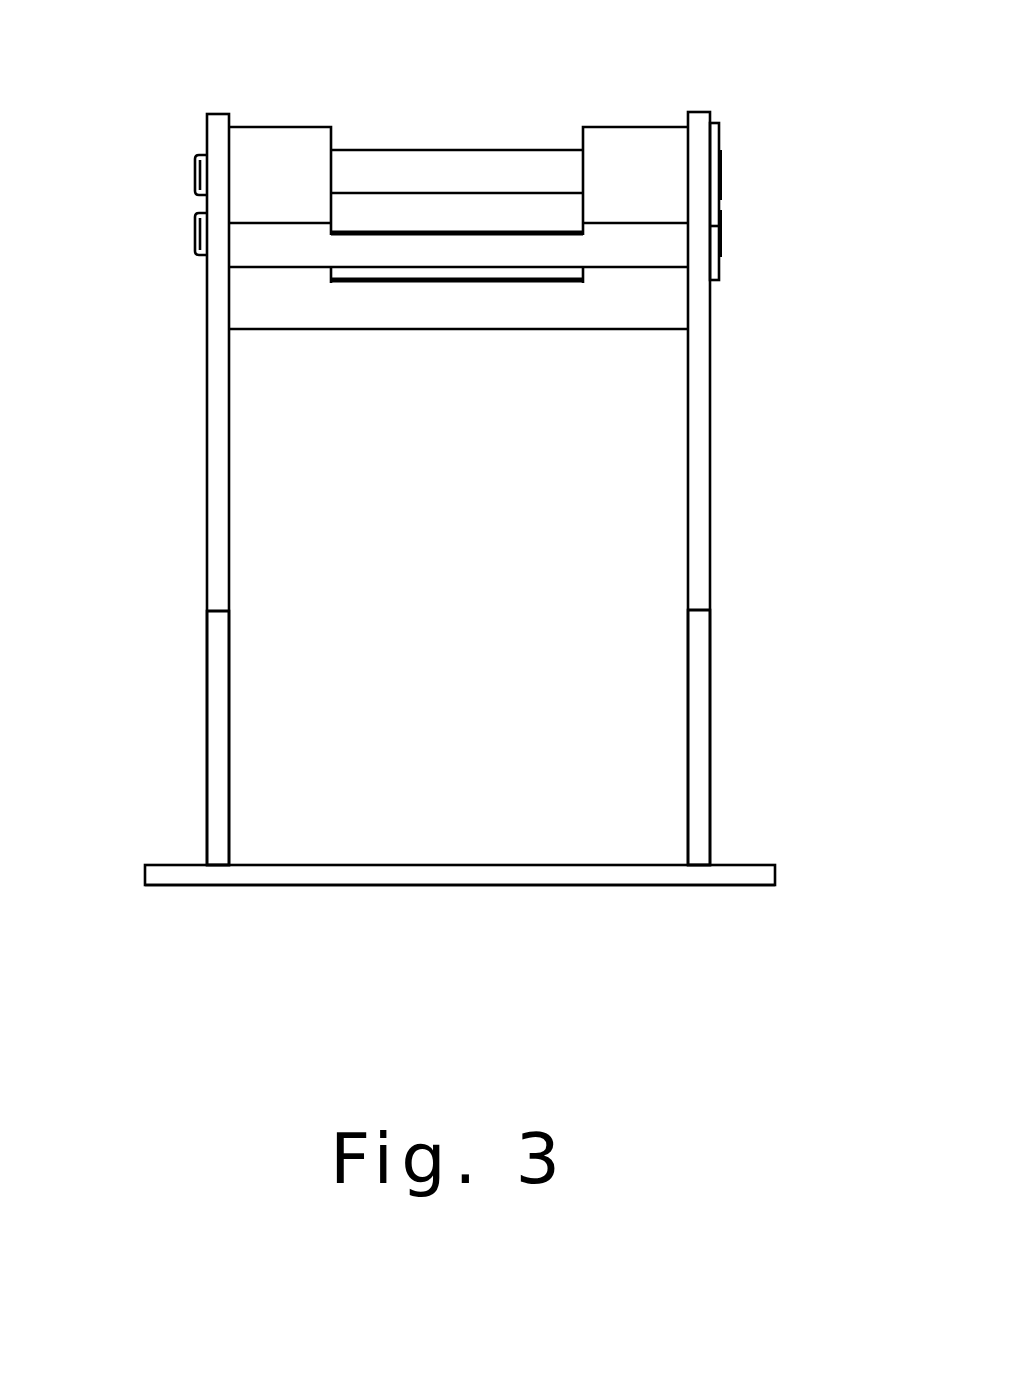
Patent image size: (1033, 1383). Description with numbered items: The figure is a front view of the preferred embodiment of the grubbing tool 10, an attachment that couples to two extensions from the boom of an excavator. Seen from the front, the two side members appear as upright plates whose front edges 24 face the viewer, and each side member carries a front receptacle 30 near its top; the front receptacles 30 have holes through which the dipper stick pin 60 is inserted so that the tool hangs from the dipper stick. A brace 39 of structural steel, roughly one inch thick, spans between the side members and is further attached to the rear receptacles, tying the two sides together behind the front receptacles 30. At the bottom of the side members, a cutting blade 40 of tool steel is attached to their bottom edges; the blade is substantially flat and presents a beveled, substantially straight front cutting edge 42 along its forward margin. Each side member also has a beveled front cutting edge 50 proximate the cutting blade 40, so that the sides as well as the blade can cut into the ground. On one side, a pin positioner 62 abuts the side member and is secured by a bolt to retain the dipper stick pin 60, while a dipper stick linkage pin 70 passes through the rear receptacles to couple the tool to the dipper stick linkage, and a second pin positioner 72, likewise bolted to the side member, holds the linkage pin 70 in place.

The grubbing tool 10 is at (222, 78).
The front edge 24 is at (229, 472).
The front receptacle 30 is at (280, 125).
The brace 39 is at (463, 298).
The cutting blade 40 is at (408, 864).
The front cutting edge 42 is at (426, 885).
The beveled front cutting edge 50 is at (207, 737).
The dipper stick pin 60 is at (195, 173).
The pin positioner 62 is at (719, 133).
The dipper stick linkage pin 70 is at (195, 240).
The second pin positioner 72 is at (719, 268).